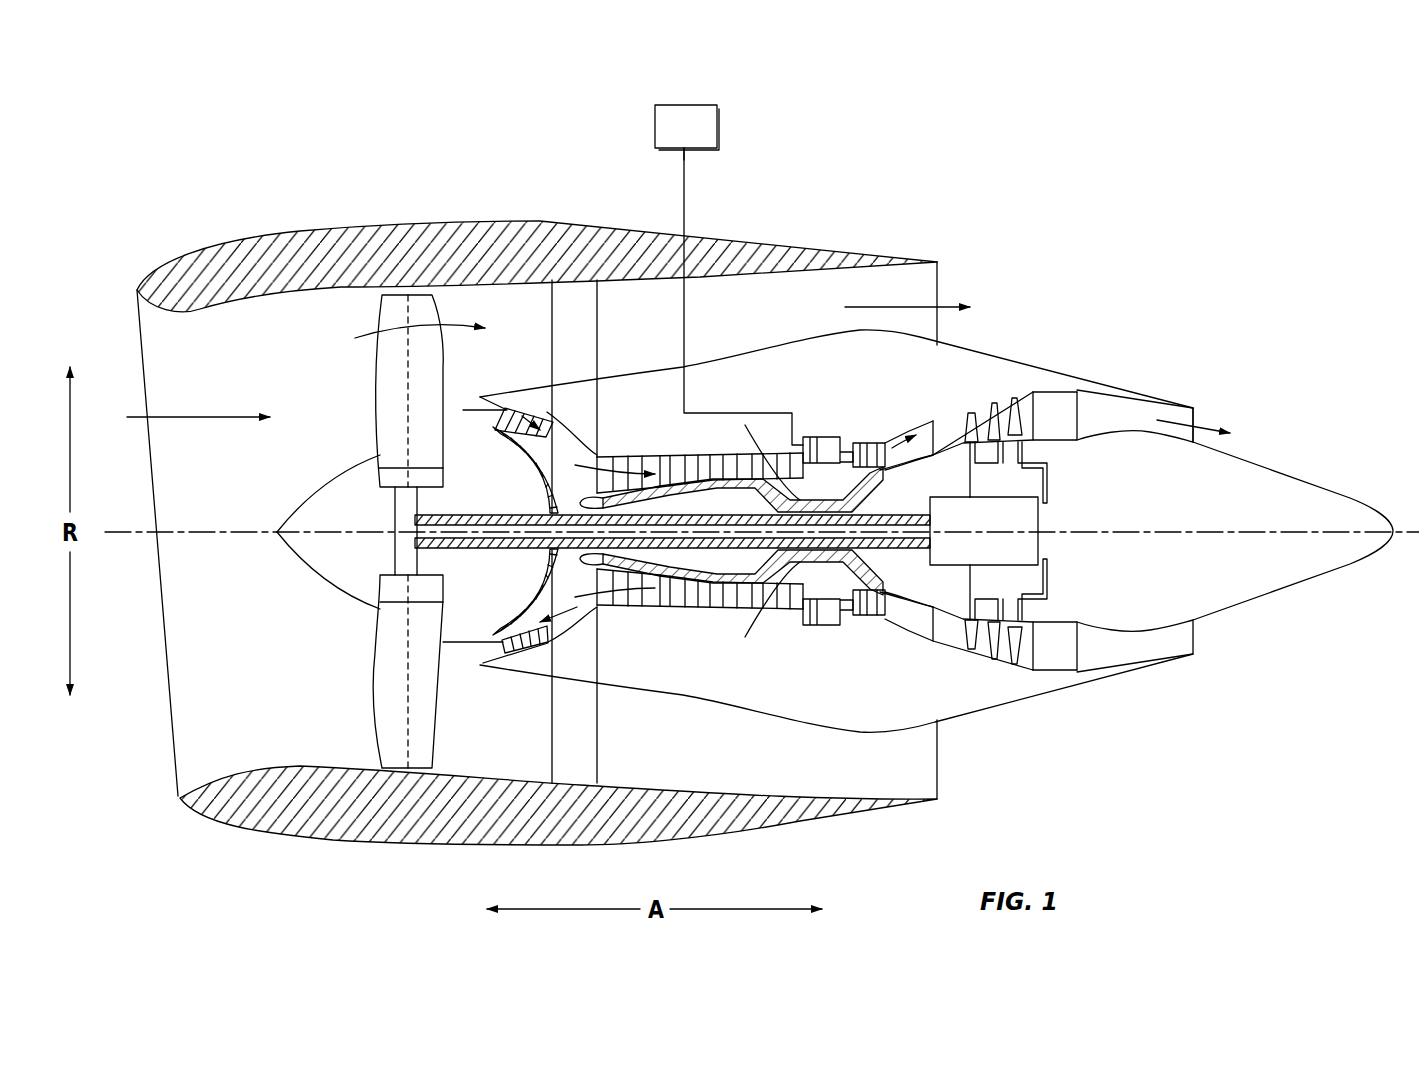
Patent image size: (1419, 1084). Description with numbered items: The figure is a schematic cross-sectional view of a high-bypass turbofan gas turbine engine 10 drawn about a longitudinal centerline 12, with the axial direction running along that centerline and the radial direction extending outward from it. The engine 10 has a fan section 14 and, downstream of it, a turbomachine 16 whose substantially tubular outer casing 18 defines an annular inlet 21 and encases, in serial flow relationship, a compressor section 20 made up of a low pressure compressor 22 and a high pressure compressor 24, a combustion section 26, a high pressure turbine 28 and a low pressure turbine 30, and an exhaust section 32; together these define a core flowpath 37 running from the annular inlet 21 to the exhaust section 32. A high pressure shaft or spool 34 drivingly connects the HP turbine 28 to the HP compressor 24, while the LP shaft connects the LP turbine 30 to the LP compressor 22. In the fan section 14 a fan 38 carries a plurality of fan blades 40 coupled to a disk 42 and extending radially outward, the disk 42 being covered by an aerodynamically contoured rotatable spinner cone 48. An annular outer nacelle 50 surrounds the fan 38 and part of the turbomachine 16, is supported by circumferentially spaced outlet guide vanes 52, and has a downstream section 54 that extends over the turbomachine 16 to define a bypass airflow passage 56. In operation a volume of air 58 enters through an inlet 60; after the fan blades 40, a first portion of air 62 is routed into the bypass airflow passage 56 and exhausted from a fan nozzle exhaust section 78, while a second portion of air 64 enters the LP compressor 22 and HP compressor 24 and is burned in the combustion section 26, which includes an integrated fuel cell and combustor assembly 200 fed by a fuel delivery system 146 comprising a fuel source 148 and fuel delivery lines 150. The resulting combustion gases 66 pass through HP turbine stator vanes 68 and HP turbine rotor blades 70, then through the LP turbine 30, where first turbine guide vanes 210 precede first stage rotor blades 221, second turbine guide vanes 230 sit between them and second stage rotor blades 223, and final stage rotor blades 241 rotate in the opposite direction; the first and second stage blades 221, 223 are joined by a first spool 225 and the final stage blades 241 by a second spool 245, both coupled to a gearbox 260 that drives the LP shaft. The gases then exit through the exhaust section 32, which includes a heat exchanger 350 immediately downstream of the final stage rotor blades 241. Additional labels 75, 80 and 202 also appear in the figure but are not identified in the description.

The gas turbine engine 10 is at (1100, 240).
The longitudinal centerline 12 is at (1303, 530).
The fan section 14 is at (430, 180).
The turbomachine 16 is at (723, 398).
The outer casing 18 is at (775, 717).
The compressor section 20 is at (570, 660).
The annular inlet 21 is at (498, 652).
The low pressure compressor 22 is at (550, 597).
The high pressure compressor 24 is at (628, 595).
The combustion section 26 is at (818, 640).
The high pressure turbine 28 is at (912, 606).
The low pressure turbine 30 is at (1015, 672).
The exhaust section 32 is at (1108, 660).
The high pressure shaft or spool 34 is at (790, 455).
The core flowpath 37 is at (574, 618).
The fan 38 is at (340, 594).
The fan blades 40 is at (377, 683).
The disk 42 is at (397, 478).
The spinner cone 48 is at (290, 553).
The outer nacelle 50 is at (410, 848).
The outlet guide vanes 52 is at (597, 330).
The downstream section 54 is at (877, 252).
The bypass airflow passage 56 is at (810, 309).
The volume of air 58 is at (207, 413).
The inlet 60 is at (172, 775).
The first portion of air 62 is at (393, 335).
The second portion of air 64 is at (480, 405).
The combustion gases 66 is at (858, 443).
The HP turbine stator vanes 68 is at (852, 615).
The HP turbine rotor blades 70 is at (860, 615).
The turbine inlet 75 is at (917, 640).
The fan nozzle exhaust section 78 is at (940, 290).
The exhaust flow 80 is at (973, 343).
The fuel delivery system 146 is at (608, 165).
The fuel source 148 is at (701, 141).
The fuel delivery lines 150 is at (685, 200).
The integrated fuel cell and combustor assembly 200 is at (822, 437).
The combustor liner 202 is at (812, 625).
The first turbine guide vanes 210 is at (868, 440).
The first stage rotor blades 221 is at (962, 412).
The second stage rotor blades 223 is at (998, 397).
The first spool 225 is at (968, 498).
The second turbine guide vanes 230 is at (985, 403).
The final stage rotor blades 241 is at (1014, 398).
The second spool 245 is at (1050, 480).
The gearbox 260 is at (1025, 530).
The heat exchanger 350 is at (1077, 408).